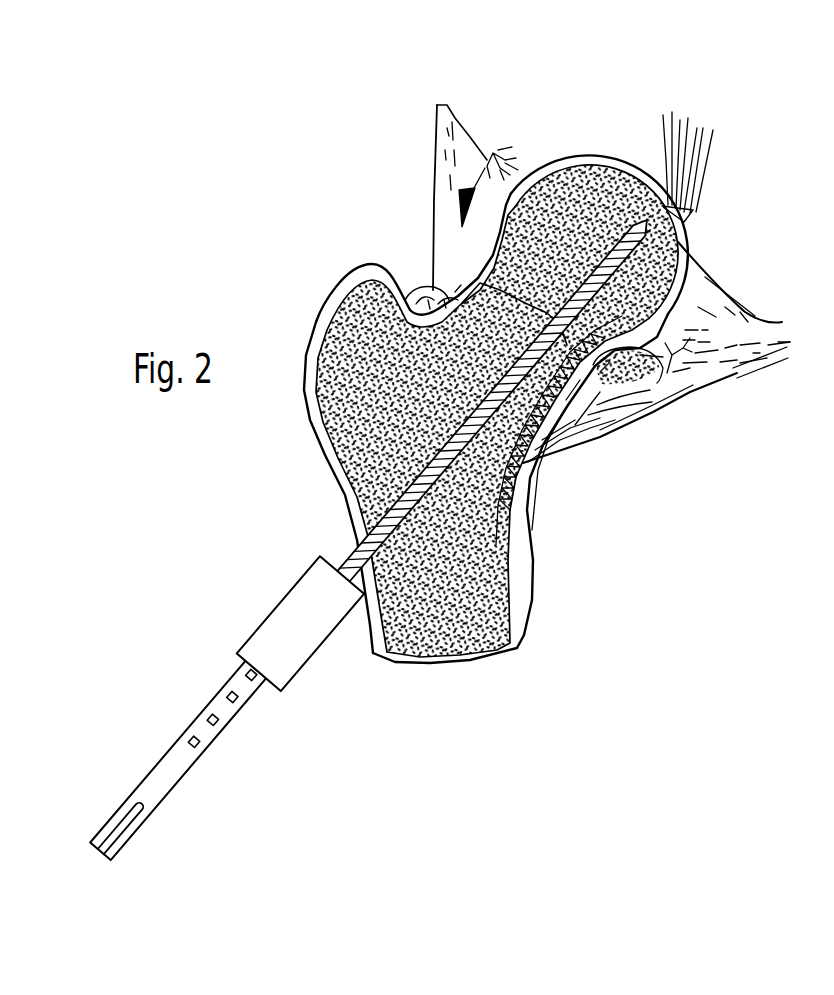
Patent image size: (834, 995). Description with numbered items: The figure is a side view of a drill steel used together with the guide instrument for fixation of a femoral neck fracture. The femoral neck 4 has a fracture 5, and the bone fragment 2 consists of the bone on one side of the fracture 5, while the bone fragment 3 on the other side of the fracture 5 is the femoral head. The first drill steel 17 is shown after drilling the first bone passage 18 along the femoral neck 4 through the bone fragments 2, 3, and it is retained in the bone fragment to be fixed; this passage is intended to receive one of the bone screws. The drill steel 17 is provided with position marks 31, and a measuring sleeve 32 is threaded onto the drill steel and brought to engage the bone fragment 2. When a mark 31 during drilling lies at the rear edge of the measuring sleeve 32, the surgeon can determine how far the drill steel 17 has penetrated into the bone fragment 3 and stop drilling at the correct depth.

The bone fragment 2 is at (348, 327).
The bone fragment 3 is at (608, 183).
The femoral neck 4 is at (493, 153).
The fracture 5 is at (462, 293).
The first drill steel 17 is at (195, 723).
The first bone passage 18 is at (478, 415).
The position marks 31 is at (226, 720).
The measuring sleeve 32 is at (297, 650).